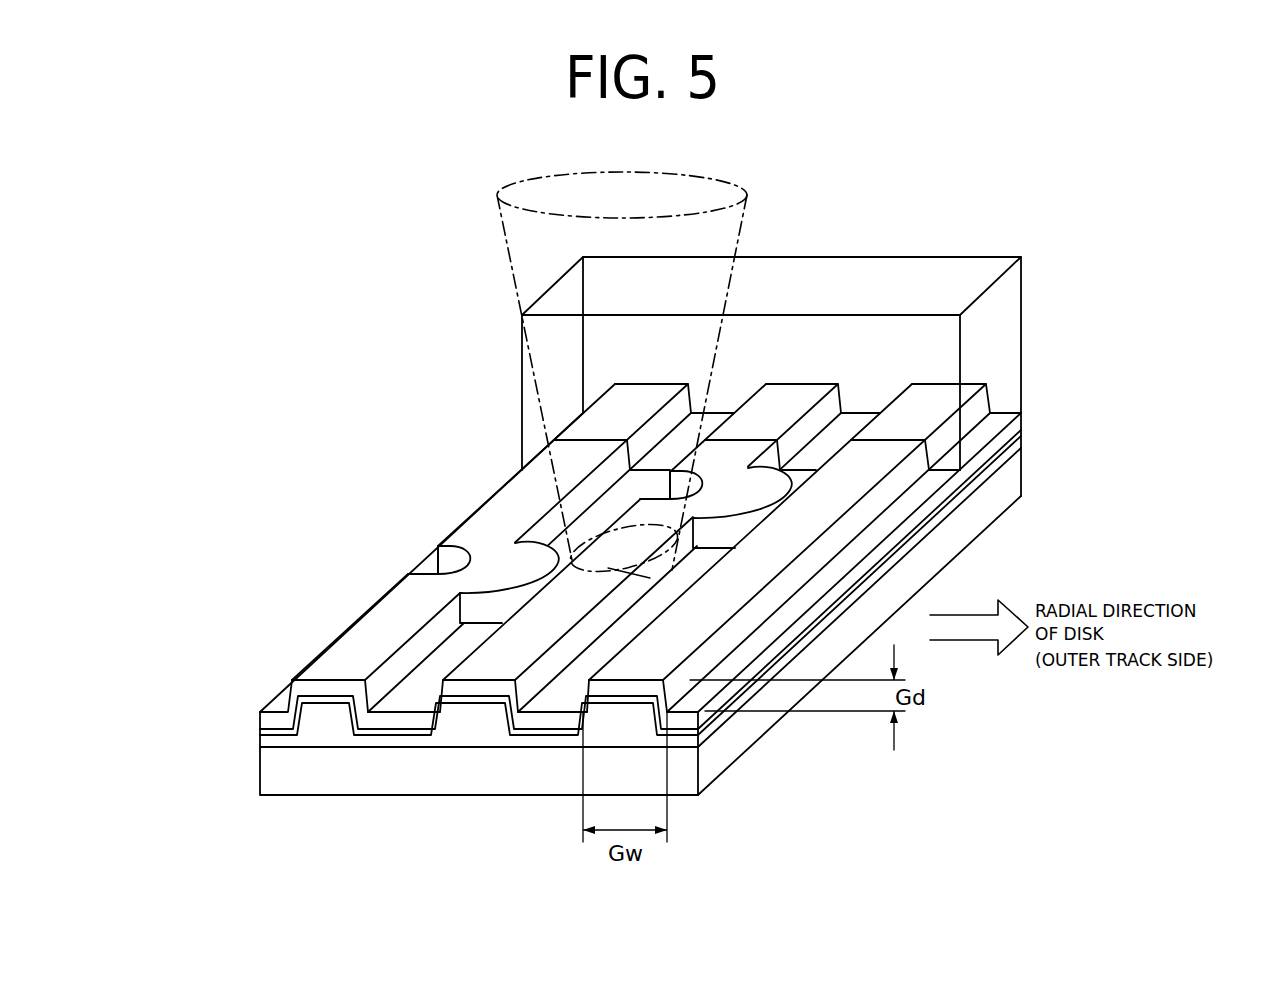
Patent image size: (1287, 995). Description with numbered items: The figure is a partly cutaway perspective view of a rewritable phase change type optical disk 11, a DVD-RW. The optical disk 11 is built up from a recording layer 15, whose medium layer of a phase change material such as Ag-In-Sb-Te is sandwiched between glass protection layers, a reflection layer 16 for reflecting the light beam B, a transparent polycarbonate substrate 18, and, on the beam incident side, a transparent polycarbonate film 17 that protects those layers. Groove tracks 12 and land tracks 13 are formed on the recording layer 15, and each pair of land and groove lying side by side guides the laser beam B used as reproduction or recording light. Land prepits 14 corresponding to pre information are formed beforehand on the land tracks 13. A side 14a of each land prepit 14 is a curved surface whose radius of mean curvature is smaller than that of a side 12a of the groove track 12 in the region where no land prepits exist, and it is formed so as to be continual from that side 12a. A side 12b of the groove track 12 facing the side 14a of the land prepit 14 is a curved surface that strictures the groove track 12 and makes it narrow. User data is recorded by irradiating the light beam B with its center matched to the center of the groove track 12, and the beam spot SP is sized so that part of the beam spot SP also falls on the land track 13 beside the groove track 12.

The optical disk 11 is at (1042, 260).
The groove track 12 is at (328, 670).
The side of groove track 12a is at (378, 683).
The side of groove track facing the land prepit 12b is at (446, 560).
The land track 13 is at (278, 707).
The land prepit 14 is at (504, 570).
The side of land prepit 14a is at (488, 612).
The recording layer 15 is at (1020, 424).
The reflection layer 16 is at (1023, 433).
The transparent film 17 is at (1012, 330).
The transparent substrate 18 is at (1018, 478).
The laser beam B is at (497, 193).
The beam spot SP is at (634, 558).